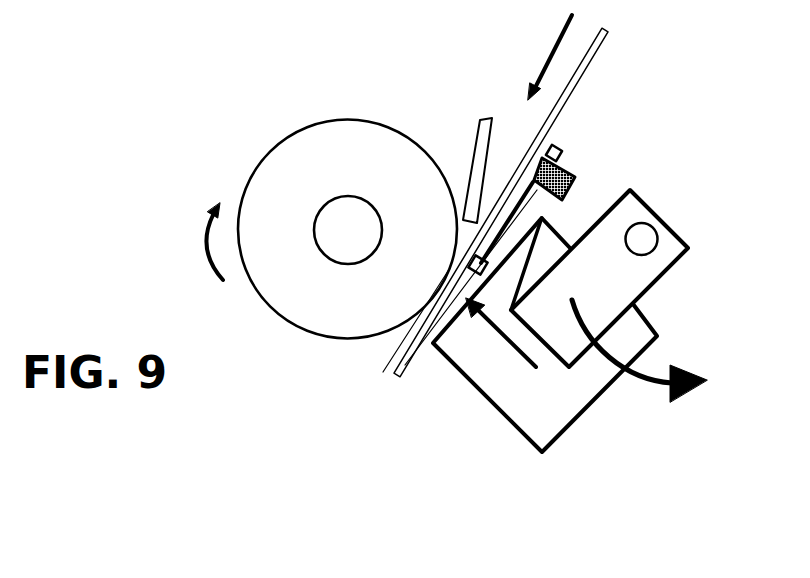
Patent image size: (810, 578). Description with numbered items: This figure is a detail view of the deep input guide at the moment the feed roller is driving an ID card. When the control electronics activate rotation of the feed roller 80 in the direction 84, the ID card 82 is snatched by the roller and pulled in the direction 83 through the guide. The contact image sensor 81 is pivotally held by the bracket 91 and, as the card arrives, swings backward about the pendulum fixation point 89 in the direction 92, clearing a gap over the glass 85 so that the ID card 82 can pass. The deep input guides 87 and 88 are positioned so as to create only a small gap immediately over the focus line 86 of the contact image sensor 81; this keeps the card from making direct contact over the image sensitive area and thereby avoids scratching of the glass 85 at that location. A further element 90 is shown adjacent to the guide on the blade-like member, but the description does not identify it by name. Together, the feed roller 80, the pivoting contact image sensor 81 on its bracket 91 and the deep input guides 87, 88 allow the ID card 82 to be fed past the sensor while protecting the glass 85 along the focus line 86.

The feed roller 80 is at (318, 128).
The contact image sensor 81 is at (533, 425).
The ID card 82 is at (613, 42).
The direction 83 is at (556, 43).
The direction 84 is at (205, 225).
The glass 85 is at (388, 373).
The focus line 86 is at (523, 360).
The deep input guide 87 is at (487, 116).
The deep input guide 88 is at (560, 144).
The pendulum fixation point 89 is at (645, 237).
The elastic member 90 is at (573, 172).
The bracket 91 is at (623, 278).
The direction 92 is at (640, 380).